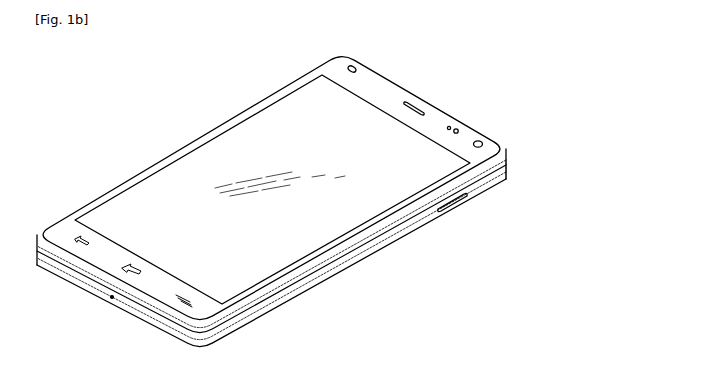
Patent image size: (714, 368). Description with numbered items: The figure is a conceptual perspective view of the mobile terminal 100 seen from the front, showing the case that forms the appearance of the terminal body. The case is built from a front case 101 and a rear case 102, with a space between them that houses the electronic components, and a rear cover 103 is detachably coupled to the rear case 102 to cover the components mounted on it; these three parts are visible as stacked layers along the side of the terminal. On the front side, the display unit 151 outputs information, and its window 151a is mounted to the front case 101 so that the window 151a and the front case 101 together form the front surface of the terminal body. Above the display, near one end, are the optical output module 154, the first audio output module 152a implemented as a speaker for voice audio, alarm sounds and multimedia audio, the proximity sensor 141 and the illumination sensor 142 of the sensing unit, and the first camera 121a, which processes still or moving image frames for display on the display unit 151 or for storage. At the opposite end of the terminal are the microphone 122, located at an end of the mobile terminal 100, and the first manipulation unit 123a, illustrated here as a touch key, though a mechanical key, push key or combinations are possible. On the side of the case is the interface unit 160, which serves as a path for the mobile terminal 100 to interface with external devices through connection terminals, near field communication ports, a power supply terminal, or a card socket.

The mobile terminal 100 is at (195, 108).
The display unit 151 is at (178, 182).
The window 151a is at (293, 118).
The optical output module 154 is at (358, 66).
The first audio output module 152a is at (415, 101).
The illumination sensor 142 is at (450, 126).
The proximity sensor 141 is at (458, 129).
The first camera 121a is at (482, 141).
The front case 101 is at (507, 155).
The rear case 102 is at (507, 167).
The rear cover 103 is at (501, 181).
The interface unit 160 is at (458, 210).
The microphone 122 is at (109, 300).
The first manipulation unit 123a is at (176, 303).